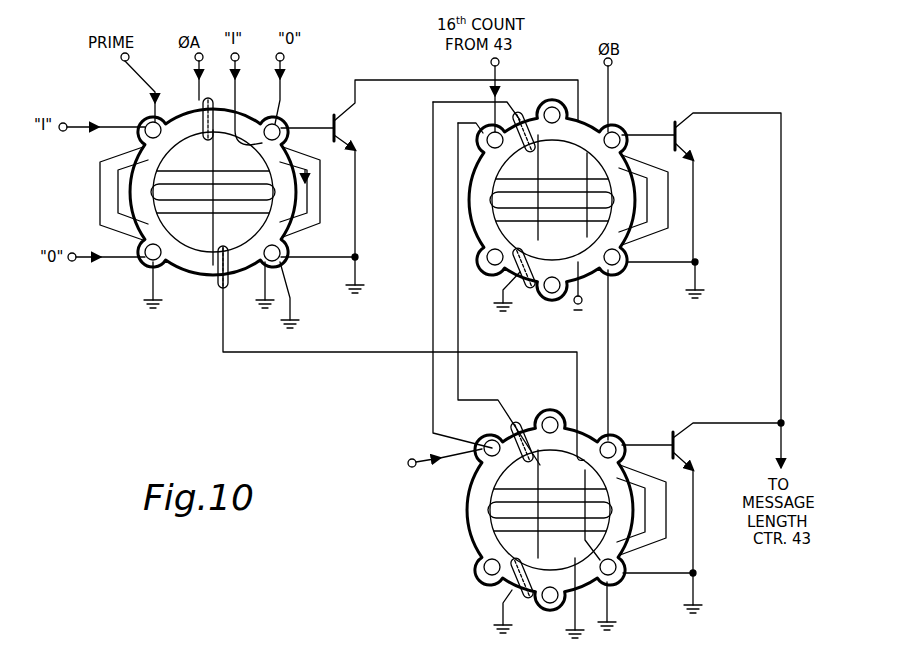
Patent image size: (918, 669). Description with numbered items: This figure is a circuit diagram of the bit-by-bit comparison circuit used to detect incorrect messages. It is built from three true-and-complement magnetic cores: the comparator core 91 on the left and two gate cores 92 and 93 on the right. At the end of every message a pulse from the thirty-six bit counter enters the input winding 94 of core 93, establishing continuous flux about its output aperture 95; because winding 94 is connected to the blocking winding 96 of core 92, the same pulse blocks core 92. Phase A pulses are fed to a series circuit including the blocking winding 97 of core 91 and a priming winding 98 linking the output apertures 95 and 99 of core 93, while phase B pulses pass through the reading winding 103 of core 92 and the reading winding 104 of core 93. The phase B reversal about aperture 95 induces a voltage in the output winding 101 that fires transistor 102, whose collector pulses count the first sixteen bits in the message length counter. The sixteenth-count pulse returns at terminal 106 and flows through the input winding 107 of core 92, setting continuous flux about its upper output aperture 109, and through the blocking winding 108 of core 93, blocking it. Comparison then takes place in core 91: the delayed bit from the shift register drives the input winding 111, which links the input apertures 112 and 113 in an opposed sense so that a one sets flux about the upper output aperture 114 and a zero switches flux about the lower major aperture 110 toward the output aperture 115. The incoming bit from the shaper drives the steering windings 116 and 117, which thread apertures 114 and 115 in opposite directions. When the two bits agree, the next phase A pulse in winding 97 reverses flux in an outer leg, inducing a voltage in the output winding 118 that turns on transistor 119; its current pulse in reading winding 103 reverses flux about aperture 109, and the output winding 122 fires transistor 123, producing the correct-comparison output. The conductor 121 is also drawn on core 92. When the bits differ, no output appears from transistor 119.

The comparator core 91 is at (203, 280).
The gate core 92 is at (472, 225).
The gate core 93 is at (468, 514).
The input winding 94 is at (460, 452).
The output aperture 95 is at (613, 441).
The blocking winding 96 is at (539, 173).
The blocking winding 97 is at (212, 163).
The priming winding 98 is at (585, 478).
The output aperture 99 is at (625, 576).
The output winding 101 is at (667, 495).
The transistor 102 is at (681, 445).
The reading winding 103 is at (645, 212).
The reading winding 104 is at (622, 532).
The terminal 106 is at (493, 68).
The input winding 107 is at (458, 160).
The blocking winding 108 is at (538, 560).
The output aperture 109 is at (192, 133).
The lower major aperture 110 is at (197, 245).
The input winding 111 is at (100, 190).
The input aperture 112 is at (143, 125).
The input aperture 113 is at (145, 262).
The upper output aperture 114 is at (281, 121).
The output aperture 115 is at (286, 265).
The steering winding 116 is at (236, 98).
The steering winding 117 is at (281, 96).
The output winding 118 is at (330, 195).
The transistor 119 is at (346, 129).
The conductor 121 is at (587, 233).
The output winding 122 is at (670, 198).
The transistor 123 is at (681, 135).